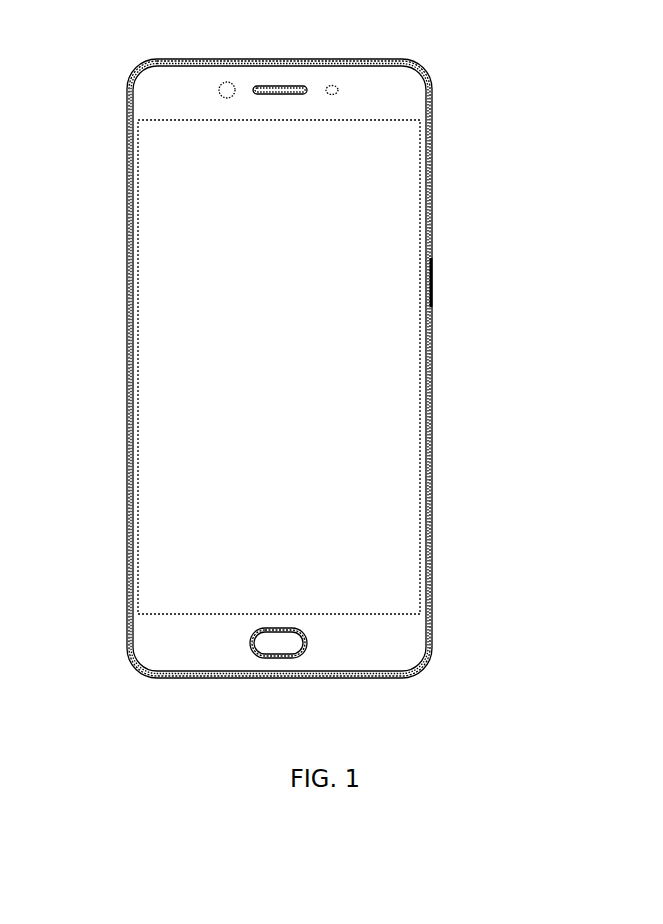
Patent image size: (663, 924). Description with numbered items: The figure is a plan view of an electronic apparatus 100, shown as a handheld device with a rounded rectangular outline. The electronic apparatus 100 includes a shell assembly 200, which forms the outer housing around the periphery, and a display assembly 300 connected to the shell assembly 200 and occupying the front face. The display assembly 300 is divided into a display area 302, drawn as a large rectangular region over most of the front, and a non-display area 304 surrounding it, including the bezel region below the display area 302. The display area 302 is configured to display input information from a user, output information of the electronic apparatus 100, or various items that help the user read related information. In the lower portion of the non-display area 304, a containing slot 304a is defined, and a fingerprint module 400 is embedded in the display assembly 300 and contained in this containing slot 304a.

The electronic apparatus 100 is at (325, 371).
The shell assembly 200 is at (430, 352).
The display assembly 300 is at (367, 412).
The display area 302 is at (407, 577).
The non-display area 304 is at (371, 412).
The containing slot 304a is at (307, 640).
The fingerprint module 400 is at (273, 645).